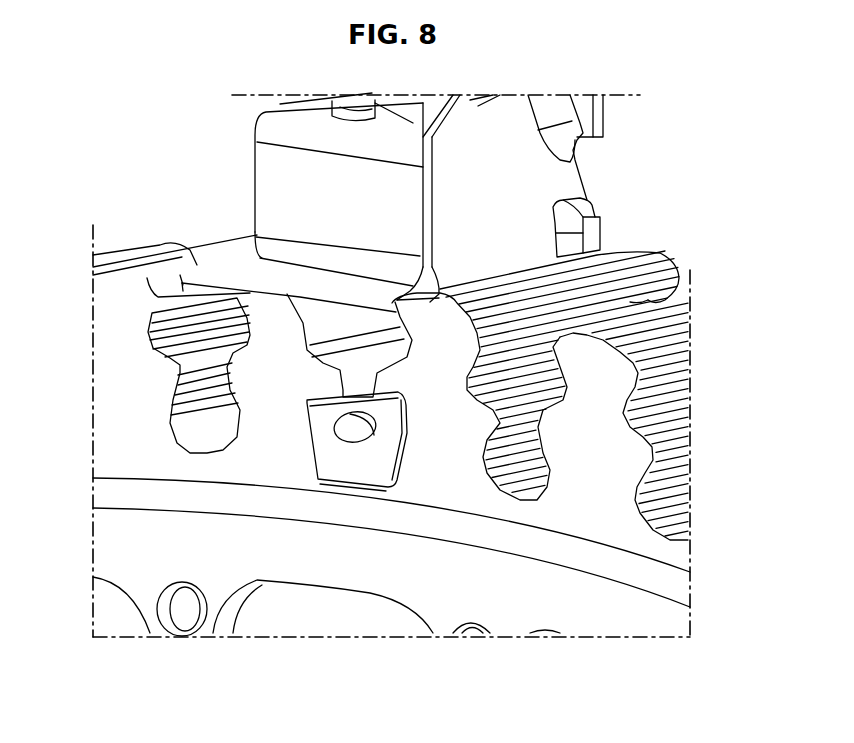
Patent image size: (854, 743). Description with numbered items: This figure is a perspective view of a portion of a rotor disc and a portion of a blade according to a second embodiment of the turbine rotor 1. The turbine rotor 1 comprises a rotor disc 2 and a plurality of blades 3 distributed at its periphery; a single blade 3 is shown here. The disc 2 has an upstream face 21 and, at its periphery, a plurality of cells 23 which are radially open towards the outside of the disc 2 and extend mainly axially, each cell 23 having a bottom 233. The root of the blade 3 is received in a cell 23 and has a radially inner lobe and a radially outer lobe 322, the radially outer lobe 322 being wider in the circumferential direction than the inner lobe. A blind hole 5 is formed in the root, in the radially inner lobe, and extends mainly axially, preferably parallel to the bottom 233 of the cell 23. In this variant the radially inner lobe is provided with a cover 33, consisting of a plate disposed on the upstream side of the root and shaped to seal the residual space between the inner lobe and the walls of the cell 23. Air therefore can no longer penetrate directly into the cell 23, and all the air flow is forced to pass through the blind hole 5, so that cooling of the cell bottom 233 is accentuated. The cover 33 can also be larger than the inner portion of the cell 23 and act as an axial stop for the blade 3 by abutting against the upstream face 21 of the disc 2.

The turbine rotor 1 is at (694, 150).
The rotor disc 2 is at (679, 231).
The blade 3 is at (224, 186).
The blind hole 5 is at (336, 428).
The upstream face 21 is at (583, 463).
The cell 23 is at (682, 295).
The cover 33 is at (350, 462).
The bottom 233 is at (512, 470).
The radially outer lobe 322 is at (353, 343).